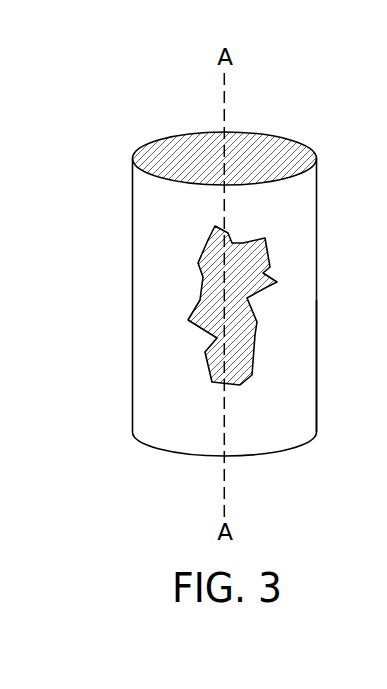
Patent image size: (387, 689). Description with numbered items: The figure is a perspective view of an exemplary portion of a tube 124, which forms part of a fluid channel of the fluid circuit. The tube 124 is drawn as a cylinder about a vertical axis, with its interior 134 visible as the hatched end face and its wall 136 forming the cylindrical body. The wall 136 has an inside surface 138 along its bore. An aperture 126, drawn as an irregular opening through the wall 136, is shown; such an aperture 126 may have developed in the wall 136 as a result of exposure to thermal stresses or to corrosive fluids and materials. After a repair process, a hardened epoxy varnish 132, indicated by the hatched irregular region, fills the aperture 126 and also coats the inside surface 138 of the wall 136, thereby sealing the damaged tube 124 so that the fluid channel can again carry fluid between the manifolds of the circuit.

The tube 124 is at (316, 203).
The aperture 126 is at (257, 330).
The hardened epoxy varnish 132 is at (263, 274).
The interior 134 is at (273, 148).
The wall 136 is at (316, 410).
The inside surface 138 is at (160, 138).